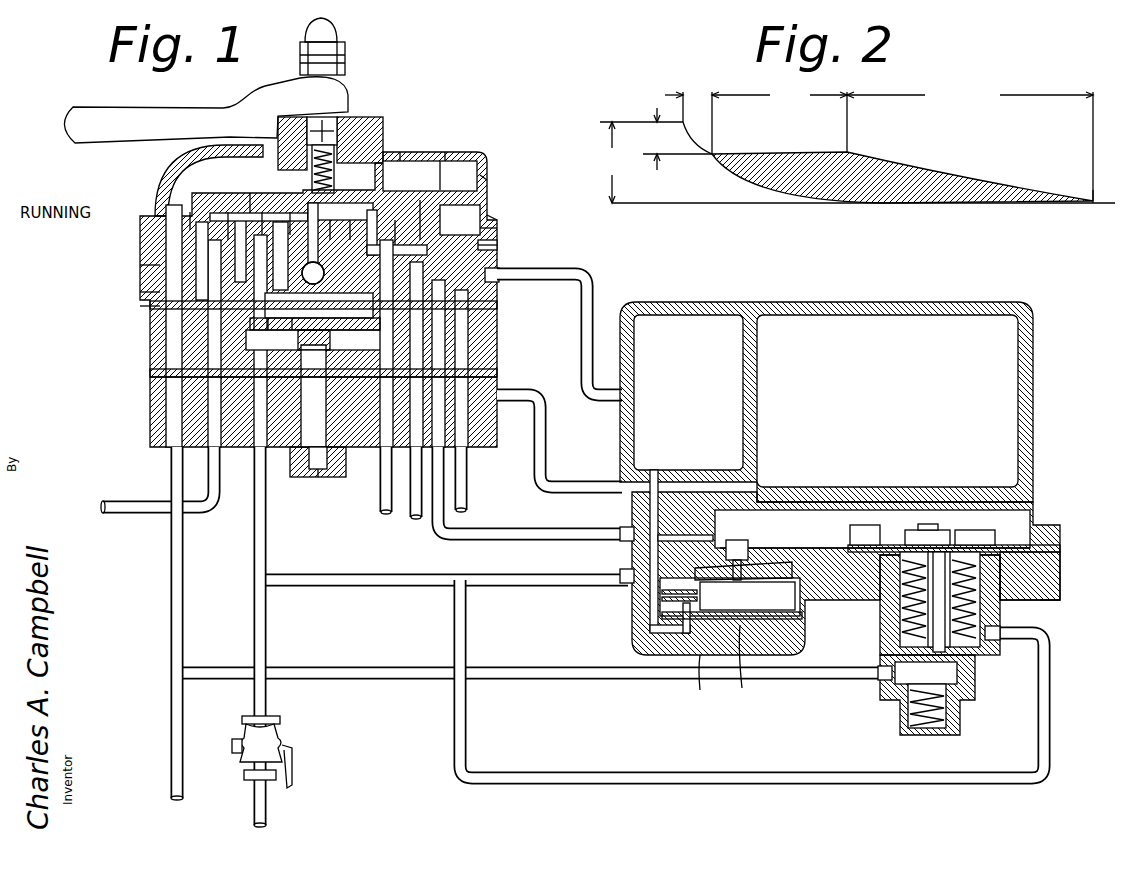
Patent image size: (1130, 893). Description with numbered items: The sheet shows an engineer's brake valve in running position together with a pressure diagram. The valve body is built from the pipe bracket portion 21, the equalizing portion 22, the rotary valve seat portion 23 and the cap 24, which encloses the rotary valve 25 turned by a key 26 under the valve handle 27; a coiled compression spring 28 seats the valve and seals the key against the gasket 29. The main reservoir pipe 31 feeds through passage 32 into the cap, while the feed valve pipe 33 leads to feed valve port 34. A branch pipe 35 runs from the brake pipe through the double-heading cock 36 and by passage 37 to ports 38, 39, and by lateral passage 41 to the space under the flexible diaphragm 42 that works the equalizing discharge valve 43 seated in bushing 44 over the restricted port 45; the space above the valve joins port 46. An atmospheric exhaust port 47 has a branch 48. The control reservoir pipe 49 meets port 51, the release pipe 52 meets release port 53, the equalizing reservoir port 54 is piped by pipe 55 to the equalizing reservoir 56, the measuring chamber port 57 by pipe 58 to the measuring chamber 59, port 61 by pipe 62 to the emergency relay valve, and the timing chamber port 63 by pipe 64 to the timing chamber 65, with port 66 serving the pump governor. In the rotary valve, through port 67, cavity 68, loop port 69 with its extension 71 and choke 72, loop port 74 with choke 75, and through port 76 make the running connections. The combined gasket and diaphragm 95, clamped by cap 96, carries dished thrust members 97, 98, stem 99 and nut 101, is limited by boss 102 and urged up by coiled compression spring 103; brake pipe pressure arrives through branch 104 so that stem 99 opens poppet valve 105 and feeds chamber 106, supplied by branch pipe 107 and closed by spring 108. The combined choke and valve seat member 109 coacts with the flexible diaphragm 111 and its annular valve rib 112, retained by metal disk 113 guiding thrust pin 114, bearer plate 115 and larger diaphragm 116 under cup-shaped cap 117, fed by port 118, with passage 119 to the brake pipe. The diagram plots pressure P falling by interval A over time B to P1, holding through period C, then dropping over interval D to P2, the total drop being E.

In FIG. 1, the pipe bracket portion 21 is at (499, 368).
In FIG. 1, the equalizing portion 22 is at (499, 326).
In FIG. 1, the rotary valve seat portion 23 is at (500, 267).
In FIG. 1, the cap 24 is at (403, 154).
In FIG. 1, the rotary valve 25 is at (421, 200).
In FIG. 1, the key 26 is at (340, 114).
In FIG. 1, the valve handle 27 is at (157, 117).
In FIG. 1, the coiled compression spring 28 is at (380, 128).
In FIG. 1, the gasket 29 is at (350, 128).
In FIG. 1, the main reservoir pipe 31 is at (170, 591).
In FIG. 1, the passage 32 is at (139, 292).
In FIG. 1, the pipe 33 is at (124, 503).
In FIG. 1, the feed valve port 34 is at (139, 265).
In FIG. 1, the branch pipe 35 is at (268, 650).
In FIG. 1, the double-heading cock 36 is at (284, 732).
In FIG. 1, the passage 37 is at (236, 460).
In FIG. 1, the brake pipe port 38 is at (229, 212).
In FIG. 1, the brake pipe port 39 is at (250, 193).
In FIG. 1, the lateral passage 41 is at (310, 328).
In FIG. 1, the flexible diaphragm 42 is at (340, 328).
In FIG. 1, the equalizing discharge valve 43 is at (262, 462).
In FIG. 1, the bushing 44 is at (345, 466).
In FIG. 1, the restricted port 45 is at (318, 479).
In FIG. 1, the port 46 is at (275, 313).
In FIG. 1, the atmospheric exhaust port 47 is at (313, 273).
In FIG. 1, the branch 48 is at (297, 314).
In FIG. 1, the control reservoir pipe 49 is at (380, 509).
In FIG. 1, the port 51 is at (352, 218).
In FIG. 1, the release pipe 52 is at (412, 516).
In FIG. 1, the release port 53 is at (445, 150).
In FIG. 1, the equalizing reservoir port 54 is at (396, 218).
In FIG. 1, the pipe 55 is at (546, 429).
In FIG. 1, the equalizing reservoir 56 is at (887, 401).
In FIG. 1, the measuring chamber port 57 is at (495, 215).
In FIG. 1, the pipe 58 is at (506, 522).
In FIG. 1, the measuring chamber 59 is at (875, 529).
In FIG. 1, the port 61 is at (499, 229).
In FIG. 1, the pipe 62 is at (468, 464).
In FIG. 1, the timing chamber port 63 is at (499, 246).
In FIG. 1, the pipe 64 is at (568, 269).
In FIG. 1, the timing chamber 65 is at (826, 402).
In FIG. 1, the port 66 is at (148, 305).
In FIG. 1, the through port 67 is at (155, 208).
In FIG. 1, the cavity 68 is at (192, 210).
In FIG. 1, the loop port 69 is at (262, 212).
In FIG. 1, the extension 71 is at (340, 218).
In FIG. 1, the choke 72 is at (294, 212).
In FIG. 1, the loop port 74 is at (306, 166).
In FIG. 1, the choke 75 is at (442, 166).
In FIG. 1, the through port 76 is at (488, 182).
In FIG. 1, the combined gasket and diaphragm 95 is at (1060, 549).
In FIG. 1, the cap 96 is at (1060, 576).
In FIG. 1, the dished thrust member 97 is at (990, 541).
In FIG. 1, the dished thrust member 98 is at (1050, 593).
In FIG. 1, the stem 99 is at (882, 607).
In FIG. 1, the nut 101 is at (958, 527).
In FIG. 1, the boss 102 is at (918, 518).
In FIG. 1, the coiled compression spring 103 is at (992, 625).
In FIG. 1, the branch 104 is at (333, 587).
In FIG. 1, the poppet valve 105 is at (882, 683).
In FIG. 1, the chamber 106 is at (960, 669).
In FIG. 1, the branch pipe 107 is at (592, 680).
In FIG. 1, the coiled compression spring 108 is at (905, 715).
In FIG. 1, the combined choke and valve seat member 109 is at (738, 548).
In FIG. 1, the flexible diaphragm 111 is at (662, 600).
In FIG. 1, the annular valve rib 112 is at (762, 576).
In FIG. 1, the metal disk 113 is at (662, 617).
In FIG. 1, the thrust pin 114 is at (743, 665).
In FIG. 1, the bearer plate 115 is at (697, 681).
In FIG. 1, the larger diaphragm 116 is at (802, 613).
In FIG. 1, the cup-shaped cap 117 is at (802, 640).
In FIG. 1, the port 118 is at (620, 552).
In FIG. 1, the passage 119 is at (662, 594).
In FIG. 2, the normal brake pipe pressure P is at (645, 123).
In FIG. 2, the reduced pressure point P1 is at (716, 152).
In FIG. 2, the final pressure P2 is at (1100, 207).
In FIG. 2, the pressure interval A is at (677, 139).
In FIG. 2, the time interval B is at (692, 94).
In FIG. 2, the period C is at (779, 94).
In FIG. 2, the time interval D is at (970, 94).
In FIG. 2, the interval E is at (609, 162).